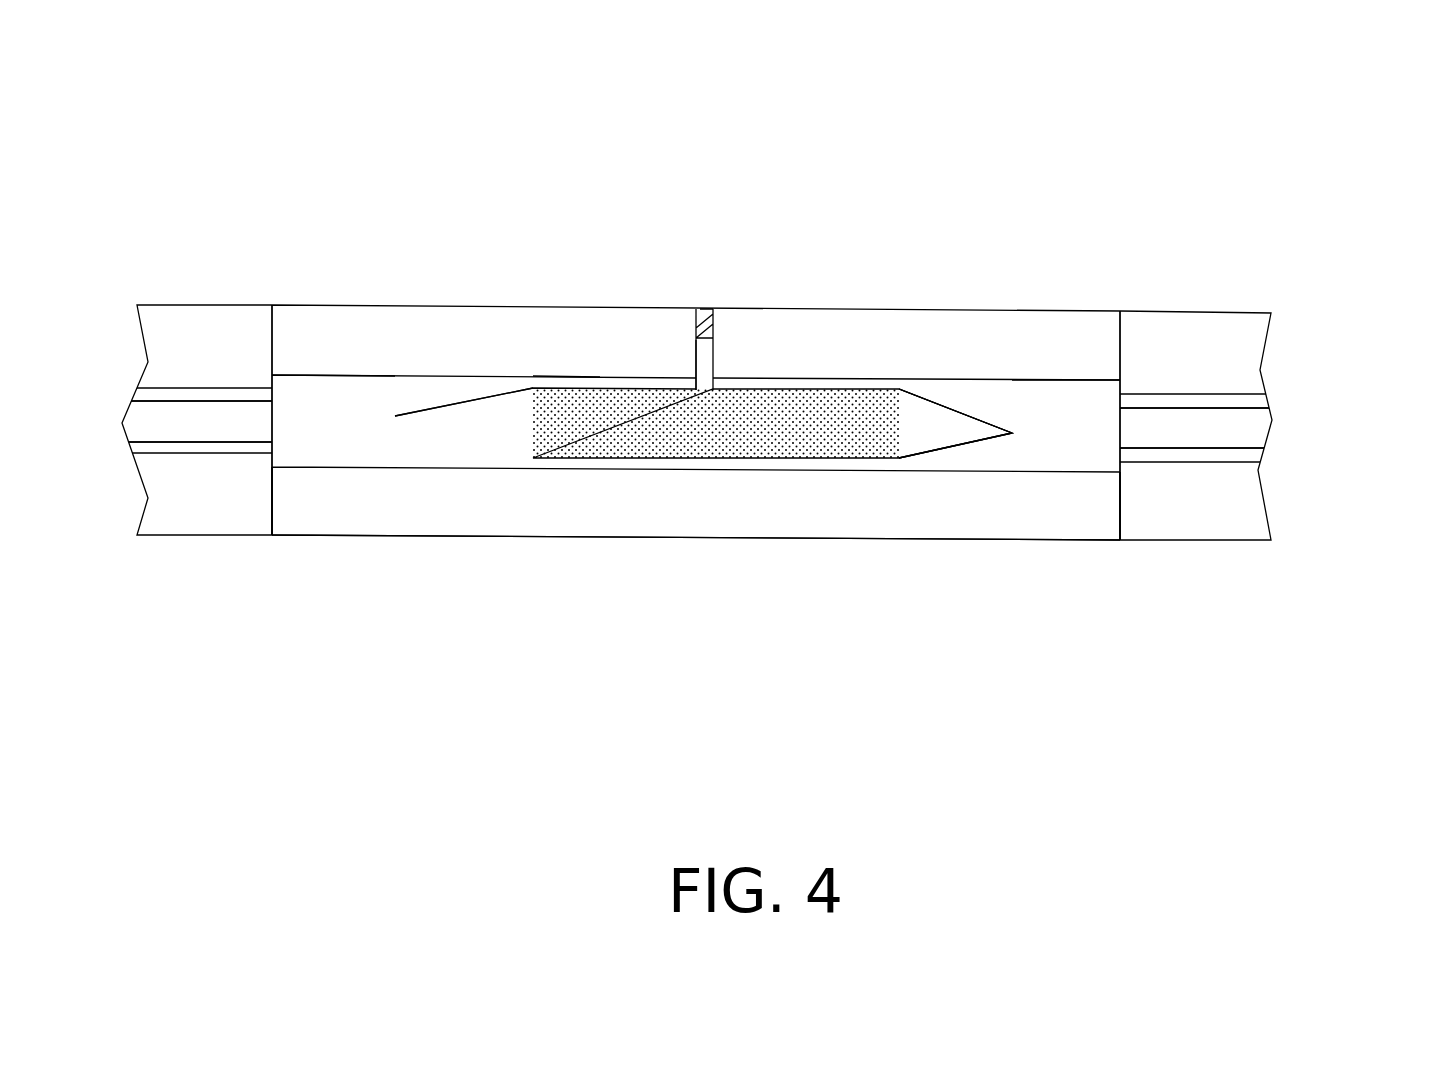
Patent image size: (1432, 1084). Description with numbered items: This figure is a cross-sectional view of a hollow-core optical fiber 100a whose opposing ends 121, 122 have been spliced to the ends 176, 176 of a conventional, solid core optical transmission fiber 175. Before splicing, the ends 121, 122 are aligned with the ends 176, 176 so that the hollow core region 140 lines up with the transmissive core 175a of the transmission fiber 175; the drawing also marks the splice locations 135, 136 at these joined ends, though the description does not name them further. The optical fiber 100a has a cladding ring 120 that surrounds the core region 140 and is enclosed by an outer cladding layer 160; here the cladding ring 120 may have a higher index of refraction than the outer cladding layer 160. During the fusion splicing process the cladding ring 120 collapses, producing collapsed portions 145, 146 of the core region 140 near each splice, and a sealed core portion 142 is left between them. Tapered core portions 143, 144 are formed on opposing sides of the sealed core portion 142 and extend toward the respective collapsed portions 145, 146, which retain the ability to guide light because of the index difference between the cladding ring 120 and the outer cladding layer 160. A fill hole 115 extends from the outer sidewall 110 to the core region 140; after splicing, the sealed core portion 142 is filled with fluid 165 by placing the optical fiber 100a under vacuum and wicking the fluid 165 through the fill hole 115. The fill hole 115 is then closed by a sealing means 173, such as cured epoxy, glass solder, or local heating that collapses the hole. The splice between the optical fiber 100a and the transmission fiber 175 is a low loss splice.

The hollow-core optical fiber 100a is at (587, 545).
The outer sidewall 110 is at (890, 308).
The fill hole 115 is at (693, 352).
The cladding ring 120 is at (792, 393).
The first end of optical fiber 121 is at (285, 484).
The second end of optical fiber 122 is at (1112, 501).
The first end wall 135 is at (272, 490).
The second end wall 136 is at (1120, 510).
The hollow core region 140 is at (1003, 405).
The sealed core portion 142 is at (917, 433).
The first tapered core portion 143 is at (448, 405).
The second tapered core portion 144 is at (957, 410).
The first collapsed portion 145 is at (330, 415).
The second collapsed portion 146 is at (1085, 407).
The outer cladding layer 160 is at (565, 352).
The fluid 165 is at (752, 428).
The sealing means 173 is at (704, 309).
The optical transmission fiber 175 is at (178, 360).
The transmissive core 175a is at (188, 424).
The end of optical transmission fiber 176 is at (265, 360).